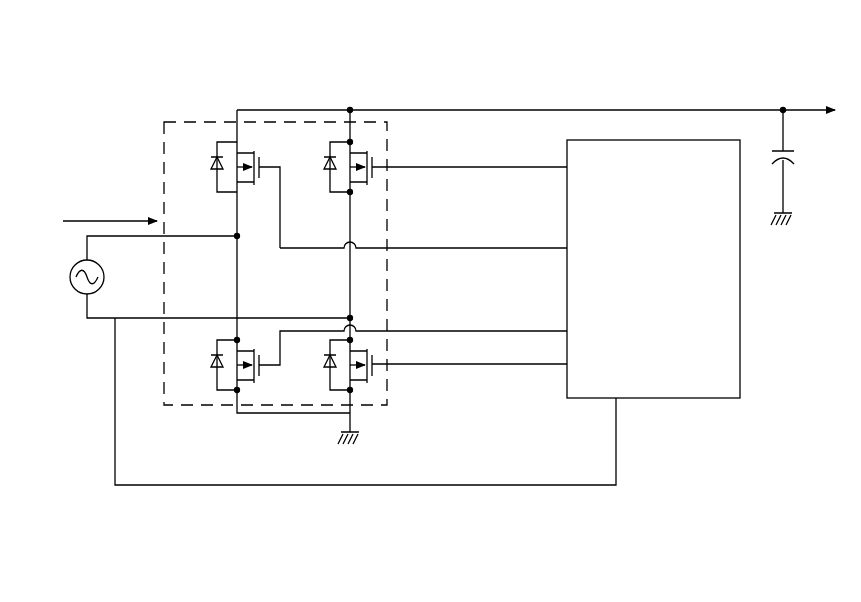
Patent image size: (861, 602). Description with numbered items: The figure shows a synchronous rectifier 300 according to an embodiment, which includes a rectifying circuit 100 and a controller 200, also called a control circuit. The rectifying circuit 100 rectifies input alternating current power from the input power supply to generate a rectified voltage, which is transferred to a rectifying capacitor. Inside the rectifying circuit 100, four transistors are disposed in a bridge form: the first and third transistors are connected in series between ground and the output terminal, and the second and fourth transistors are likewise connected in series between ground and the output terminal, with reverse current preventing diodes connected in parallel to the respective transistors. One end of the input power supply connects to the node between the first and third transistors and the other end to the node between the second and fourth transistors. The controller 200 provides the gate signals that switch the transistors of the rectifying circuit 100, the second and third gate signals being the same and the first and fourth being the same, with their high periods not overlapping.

The rectifying circuit 100 is at (176, 121).
The controller 200 is at (726, 399).
The synchronous rectifier 300 is at (323, 41).